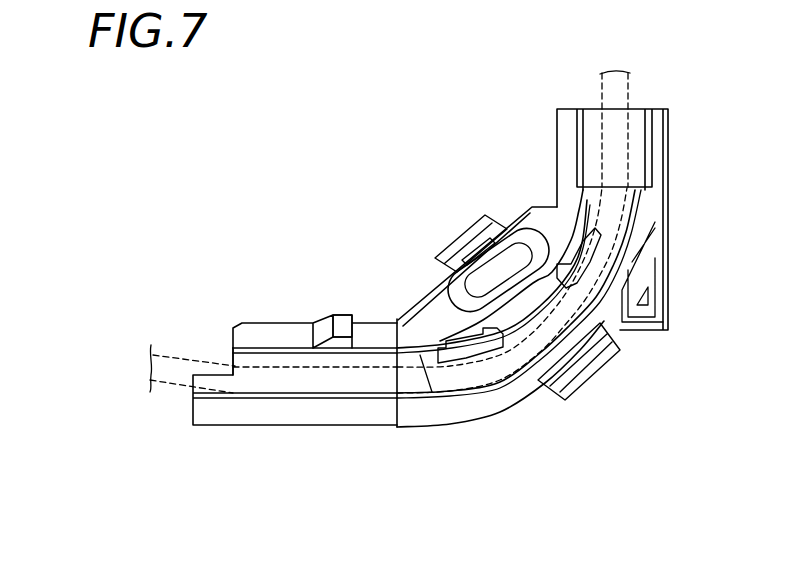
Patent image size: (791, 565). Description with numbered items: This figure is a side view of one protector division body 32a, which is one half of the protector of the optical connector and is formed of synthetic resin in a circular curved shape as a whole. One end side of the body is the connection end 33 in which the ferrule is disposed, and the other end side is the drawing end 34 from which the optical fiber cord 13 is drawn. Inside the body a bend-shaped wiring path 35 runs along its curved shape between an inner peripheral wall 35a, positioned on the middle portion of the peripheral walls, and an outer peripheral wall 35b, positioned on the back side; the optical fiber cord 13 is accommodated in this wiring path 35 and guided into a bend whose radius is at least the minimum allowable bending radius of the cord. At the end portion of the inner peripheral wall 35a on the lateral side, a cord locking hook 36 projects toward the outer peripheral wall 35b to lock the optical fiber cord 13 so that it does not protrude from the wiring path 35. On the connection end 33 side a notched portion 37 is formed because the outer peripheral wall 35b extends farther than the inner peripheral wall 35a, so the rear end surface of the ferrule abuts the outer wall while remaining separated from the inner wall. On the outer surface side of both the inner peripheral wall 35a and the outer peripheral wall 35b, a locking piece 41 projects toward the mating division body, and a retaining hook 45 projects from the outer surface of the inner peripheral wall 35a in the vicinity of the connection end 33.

The optical fiber cord 13 is at (632, 80).
The protector division body 32a is at (491, 414).
The connection end 33 is at (193, 393).
The drawing end 34 is at (632, 108).
The wiring path 35 is at (348, 377).
The inner peripheral wall 35a is at (278, 323).
The outer peripheral wall 35b is at (367, 422).
The cord locking hook 36 is at (455, 345).
The notched portion 37 is at (233, 355).
The locking piece 41 is at (468, 232).
The retaining hook 45 is at (340, 315).